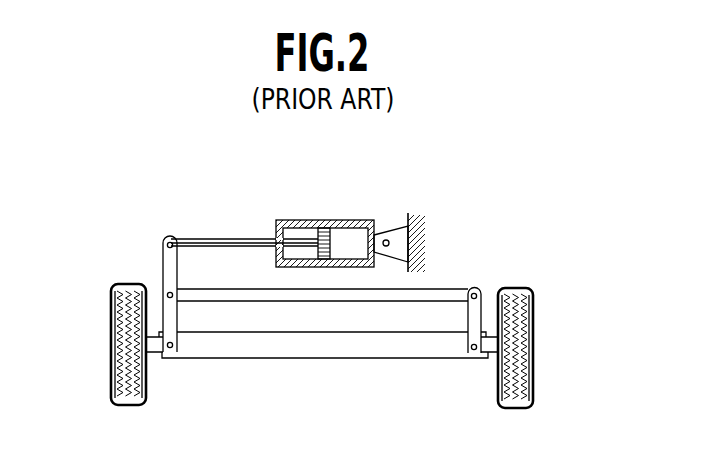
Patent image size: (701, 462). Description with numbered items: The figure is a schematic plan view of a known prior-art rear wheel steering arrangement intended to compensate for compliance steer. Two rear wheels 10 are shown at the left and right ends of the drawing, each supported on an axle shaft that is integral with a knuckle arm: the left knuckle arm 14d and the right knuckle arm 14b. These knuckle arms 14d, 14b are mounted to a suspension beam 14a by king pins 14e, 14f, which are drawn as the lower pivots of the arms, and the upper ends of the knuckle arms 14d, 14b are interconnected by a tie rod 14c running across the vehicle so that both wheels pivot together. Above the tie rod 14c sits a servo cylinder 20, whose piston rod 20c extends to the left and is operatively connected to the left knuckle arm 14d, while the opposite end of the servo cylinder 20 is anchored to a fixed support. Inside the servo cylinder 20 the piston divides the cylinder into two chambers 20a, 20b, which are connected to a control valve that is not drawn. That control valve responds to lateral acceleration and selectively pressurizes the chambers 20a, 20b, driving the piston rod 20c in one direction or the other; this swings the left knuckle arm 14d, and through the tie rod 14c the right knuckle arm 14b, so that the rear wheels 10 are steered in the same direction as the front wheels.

The rear wheels 10 is at (110, 298).
The suspension beam 14a is at (388, 358).
The right knuckle arm 14b is at (484, 303).
The tie rod 14c is at (449, 288).
The left knuckle arm 14d is at (204, 294).
The king pin 14e is at (171, 351).
The king pin 14f is at (472, 353).
The servo cylinder 20 is at (334, 225).
The chamber 20a is at (343, 235).
The chamber 20b is at (296, 250).
The piston rod 20c is at (228, 240).